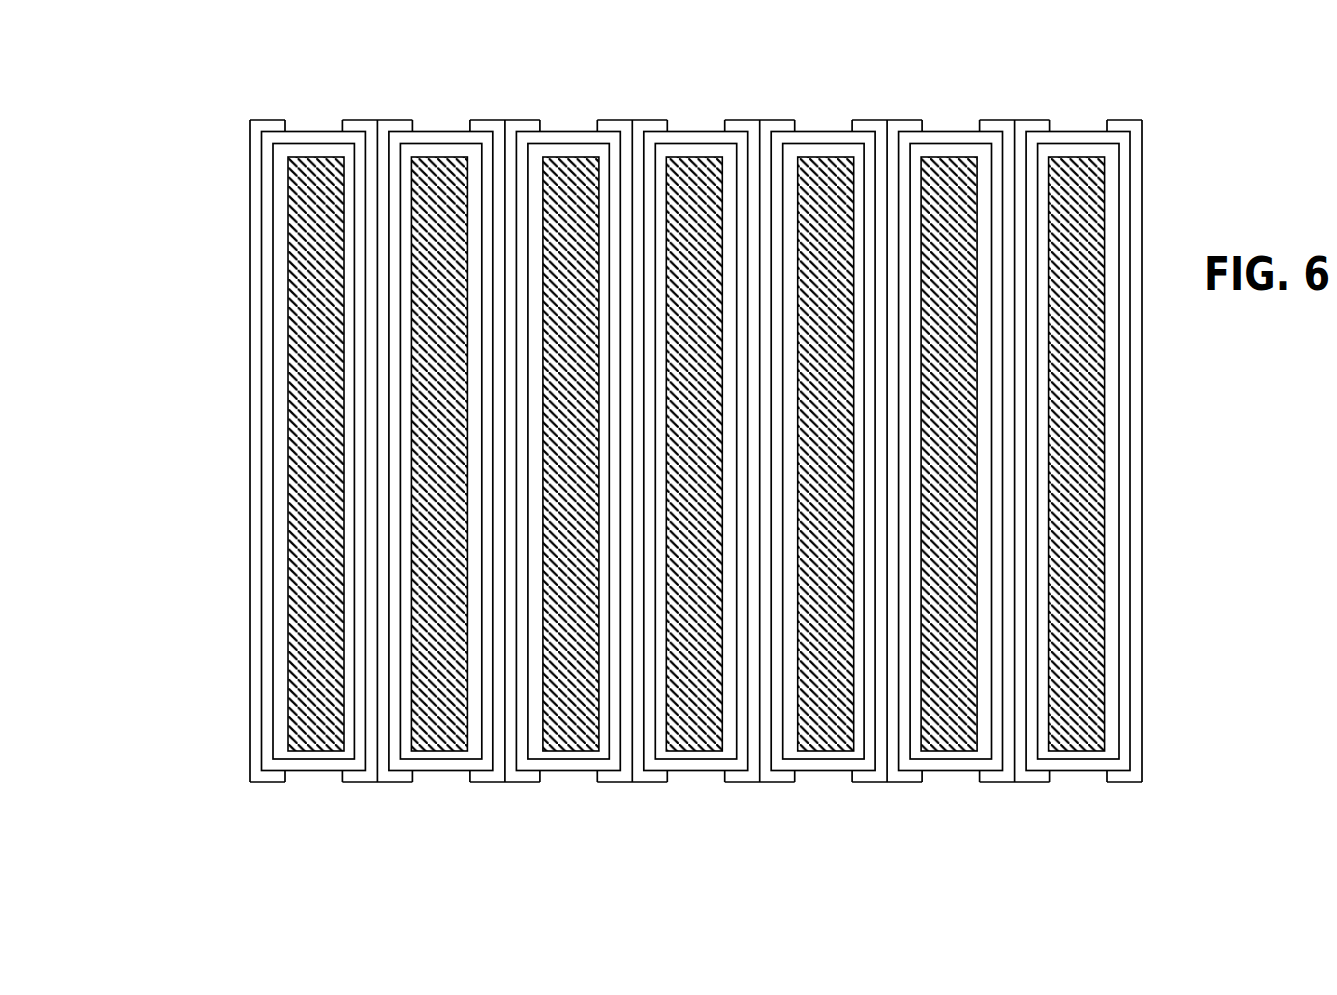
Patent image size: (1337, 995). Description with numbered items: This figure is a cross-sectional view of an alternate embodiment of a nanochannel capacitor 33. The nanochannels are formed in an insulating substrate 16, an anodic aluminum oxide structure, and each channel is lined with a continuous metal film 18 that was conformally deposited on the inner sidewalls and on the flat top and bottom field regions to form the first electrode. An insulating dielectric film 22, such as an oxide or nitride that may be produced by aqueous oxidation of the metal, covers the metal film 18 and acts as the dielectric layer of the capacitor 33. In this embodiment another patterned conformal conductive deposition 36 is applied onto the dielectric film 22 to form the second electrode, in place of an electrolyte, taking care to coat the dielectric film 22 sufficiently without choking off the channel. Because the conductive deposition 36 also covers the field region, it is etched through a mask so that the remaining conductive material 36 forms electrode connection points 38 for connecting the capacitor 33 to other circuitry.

The insulating substrate 16 is at (413, 245).
The metal film 18 is at (273, 412).
The dielectric film 22 is at (262, 457).
The capacitor 33 is at (1240, 110).
The conductive deposition 36 is at (250, 318).
The electrode connection points 38 is at (634, 129).